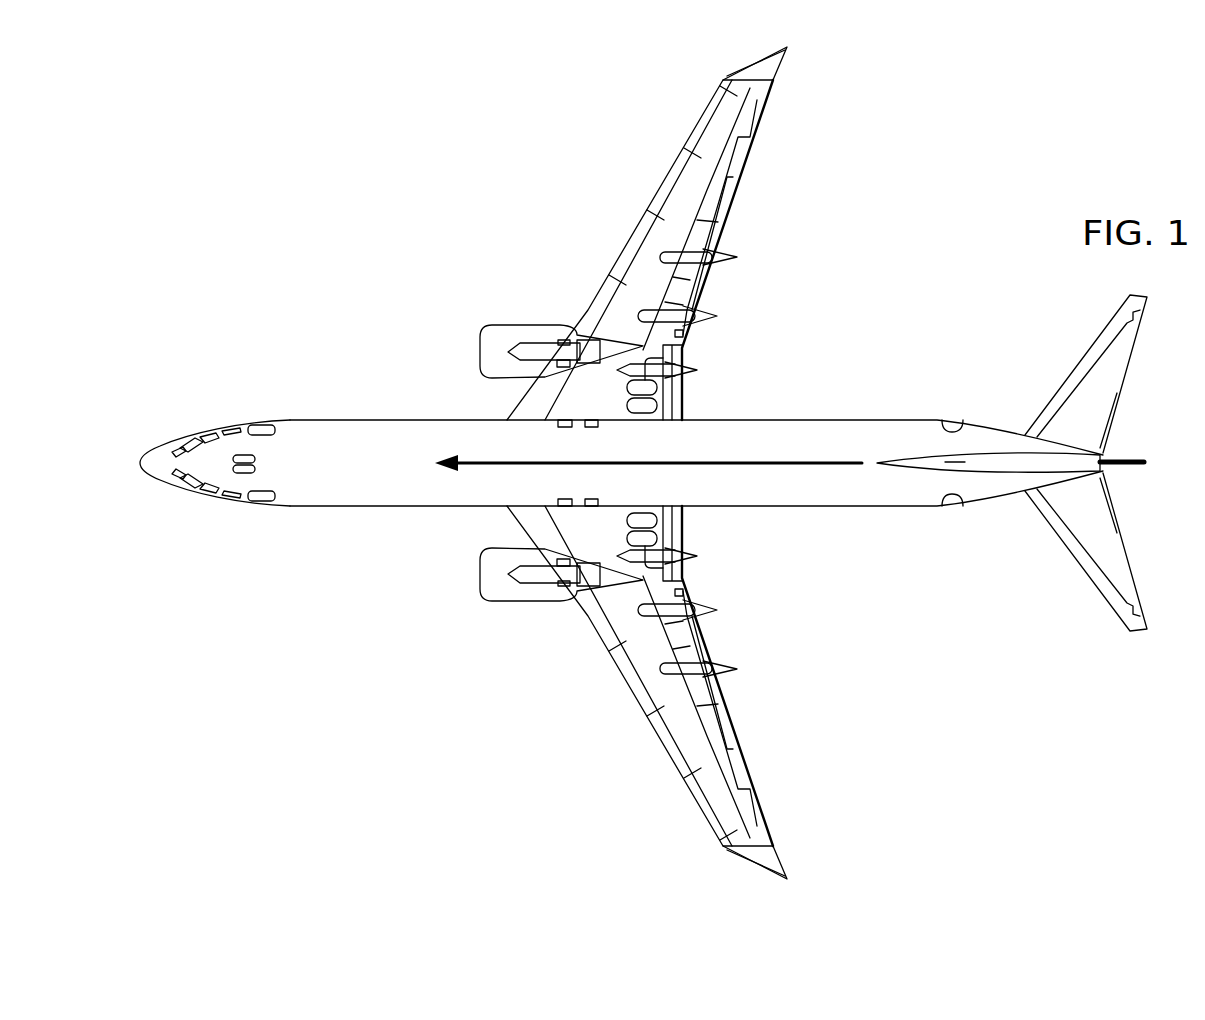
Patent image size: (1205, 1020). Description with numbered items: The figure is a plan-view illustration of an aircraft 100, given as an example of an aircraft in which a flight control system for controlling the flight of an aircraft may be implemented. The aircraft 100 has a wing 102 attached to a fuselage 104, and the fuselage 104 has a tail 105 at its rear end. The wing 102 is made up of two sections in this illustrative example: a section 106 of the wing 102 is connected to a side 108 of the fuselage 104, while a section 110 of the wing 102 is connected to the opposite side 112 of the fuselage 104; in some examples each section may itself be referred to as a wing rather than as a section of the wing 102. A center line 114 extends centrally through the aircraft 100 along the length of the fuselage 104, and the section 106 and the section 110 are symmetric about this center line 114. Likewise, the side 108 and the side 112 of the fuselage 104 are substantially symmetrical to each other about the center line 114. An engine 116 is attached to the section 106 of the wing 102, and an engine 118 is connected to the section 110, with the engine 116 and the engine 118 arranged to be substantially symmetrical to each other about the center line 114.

The aircraft 100 is at (332, 182).
The wing 102 is at (756, 158).
The fuselage 104 is at (339, 431).
The tail 105 is at (1086, 378).
The section of wing 106 is at (737, 257).
The side of fuselage 108 is at (828, 431).
The section of wing 110 is at (718, 611).
The side of fuselage 112 is at (827, 497).
The center line 114 is at (477, 462).
The engine 116 is at (482, 352).
The engine 118 is at (482, 576).